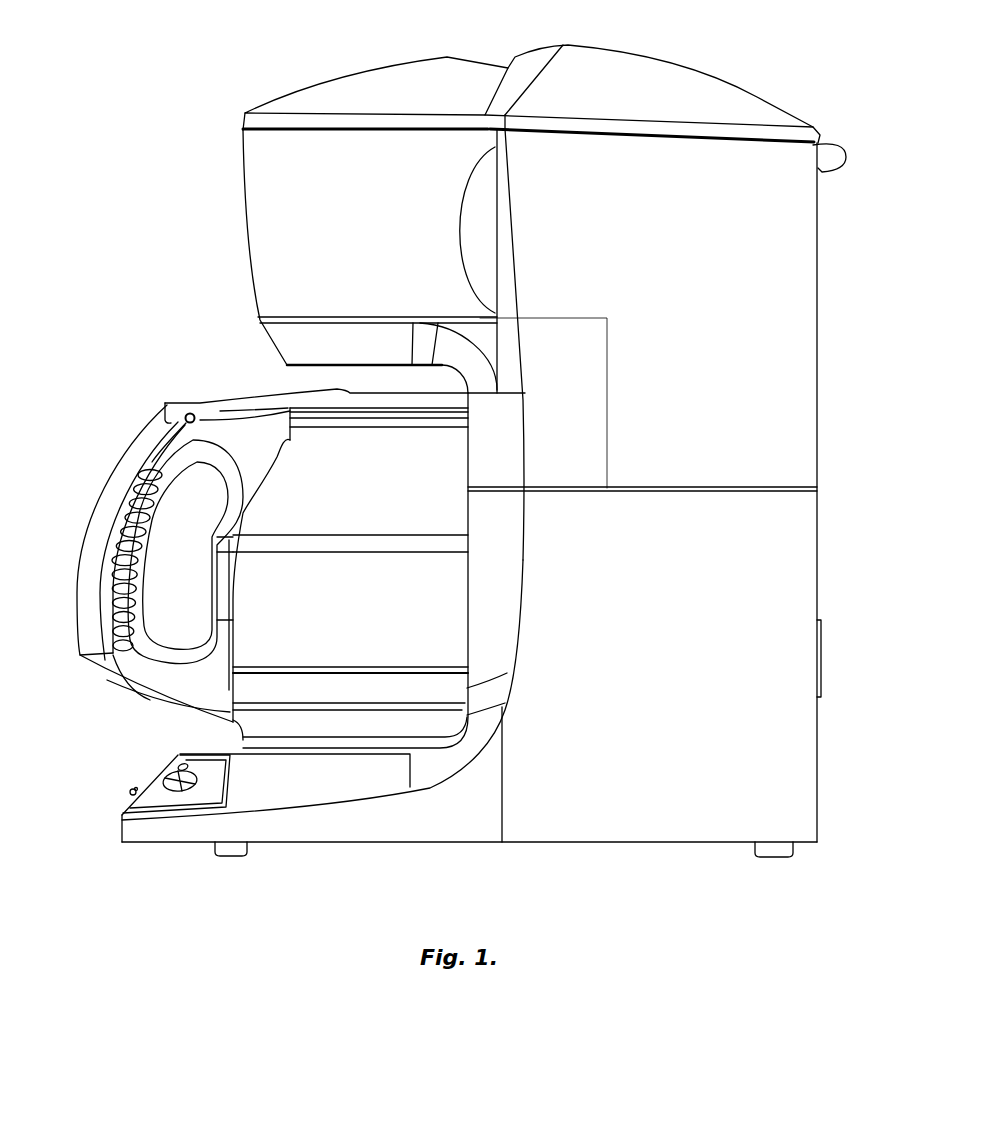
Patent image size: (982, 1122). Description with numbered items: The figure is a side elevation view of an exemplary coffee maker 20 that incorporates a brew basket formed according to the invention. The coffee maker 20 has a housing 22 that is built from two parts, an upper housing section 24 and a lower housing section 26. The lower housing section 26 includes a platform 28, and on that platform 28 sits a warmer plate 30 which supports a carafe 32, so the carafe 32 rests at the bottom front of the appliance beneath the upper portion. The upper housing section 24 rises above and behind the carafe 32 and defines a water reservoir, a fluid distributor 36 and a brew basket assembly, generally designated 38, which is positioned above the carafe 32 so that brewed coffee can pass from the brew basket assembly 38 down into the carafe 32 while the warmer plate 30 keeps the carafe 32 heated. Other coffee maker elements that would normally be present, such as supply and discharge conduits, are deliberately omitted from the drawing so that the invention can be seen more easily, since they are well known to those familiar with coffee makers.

The coffee maker 20 is at (178, 891).
The housing 22 is at (792, 98).
The upper housing section 24 is at (818, 328).
The lower housing section 26 is at (818, 557).
The platform 28 is at (212, 741).
The warmer plate 30 is at (243, 737).
The carafe 32 is at (113, 475).
The fluid distributor 36 is at (264, 98).
The brew basket assembly 38 is at (230, 227).